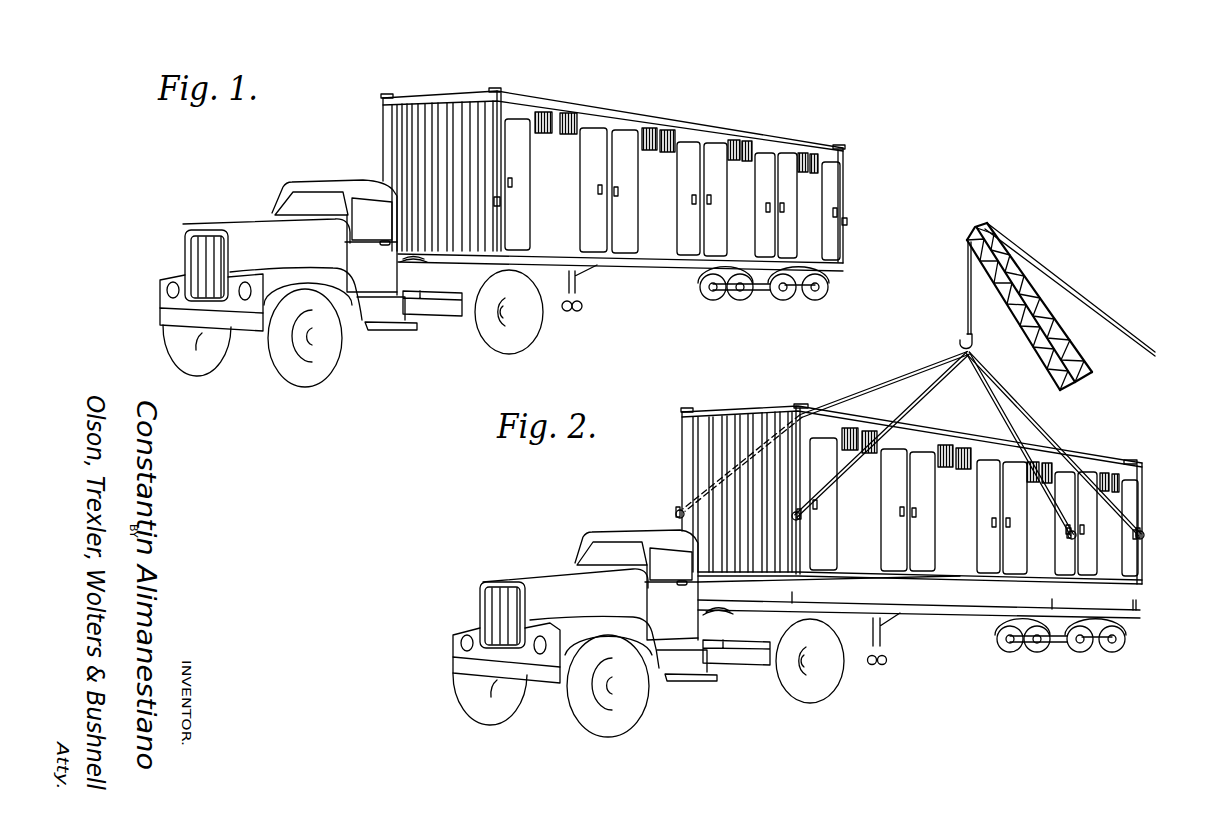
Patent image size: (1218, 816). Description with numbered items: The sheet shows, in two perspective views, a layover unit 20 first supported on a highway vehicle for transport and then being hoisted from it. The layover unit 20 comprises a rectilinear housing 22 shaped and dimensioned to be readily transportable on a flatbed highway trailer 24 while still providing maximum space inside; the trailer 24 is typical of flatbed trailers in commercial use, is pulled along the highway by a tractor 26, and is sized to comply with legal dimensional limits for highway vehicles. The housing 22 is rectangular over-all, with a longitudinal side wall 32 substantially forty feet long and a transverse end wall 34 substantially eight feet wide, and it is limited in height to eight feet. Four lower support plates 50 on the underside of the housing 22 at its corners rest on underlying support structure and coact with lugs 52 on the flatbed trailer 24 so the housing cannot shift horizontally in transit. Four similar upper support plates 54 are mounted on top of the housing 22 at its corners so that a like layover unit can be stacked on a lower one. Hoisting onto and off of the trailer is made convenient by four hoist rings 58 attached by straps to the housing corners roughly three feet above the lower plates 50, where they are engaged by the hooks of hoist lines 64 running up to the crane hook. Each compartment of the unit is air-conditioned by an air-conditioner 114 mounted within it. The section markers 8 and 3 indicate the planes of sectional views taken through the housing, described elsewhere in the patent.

In FIG. 1, the layover unit 20 is at (703, 123).
In FIG. 1, the housing 22 is at (648, 264).
In FIG. 2, the housing 22 is at (920, 581).
In FIG. 1, the flatbed highway trailer 24 is at (835, 272).
In FIG. 2, the flatbed highway trailer 24 is at (927, 626).
In FIG. 1, the tractor 26 is at (388, 331).
In FIG. 2, the tractor 26 is at (688, 690).
In FIG. 1, the longitudinal side wall 32 is at (613, 122).
In FIG. 2, the longitudinal side wall 32 is at (919, 440).
In FIG. 1, the transverse end wall 34 is at (390, 120).
In FIG. 2, the transverse end wall 34 is at (703, 458).
In FIG. 1, the lower support plates 50 is at (846, 262).
In FIG. 2, the lower support plates 50 is at (870, 581).
In FIG. 2, the lugs 52 is at (788, 597).
In FIG. 1, the upper support plates 54 is at (395, 94).
In FIG. 2, the upper support plates 54 is at (691, 408).
In FIG. 1, the hoist rings 58 is at (498, 204).
In FIG. 2, the hoist rings 58 is at (675, 512).
In FIG. 2, the hoist lines 64 is at (929, 390).
In FIG. 1, the air-conditioner 114 is at (748, 142).
In FIG. 1, the section line 8- 8 is at (388, 84).
In FIG. 1, the section line 3- 3 is at (380, 138).